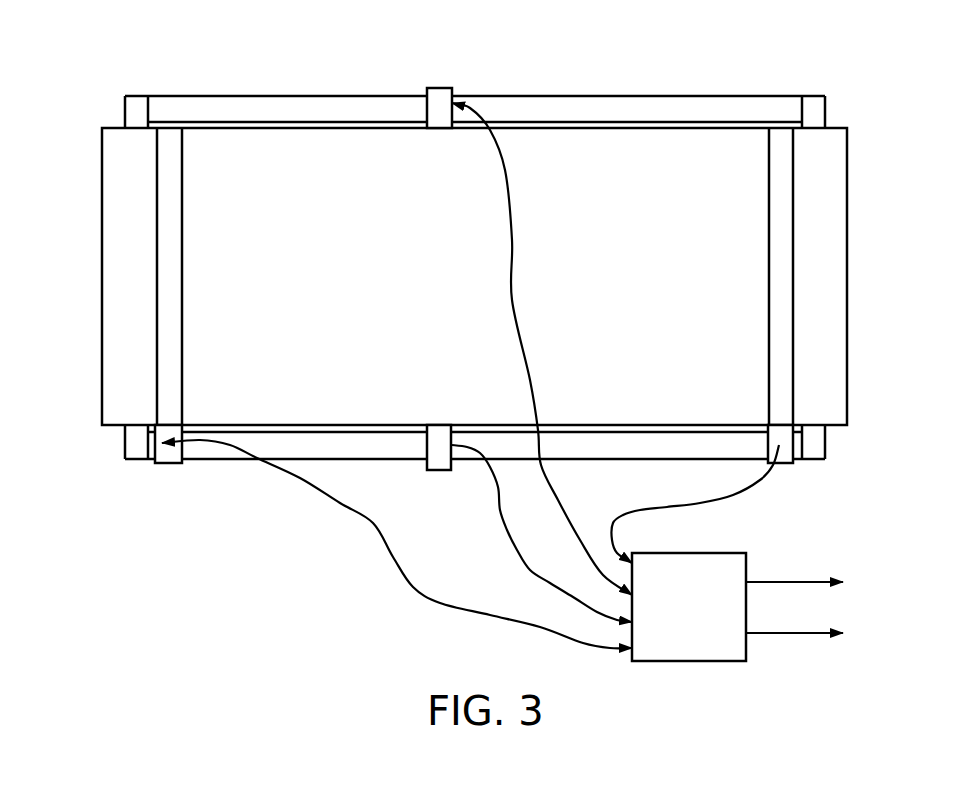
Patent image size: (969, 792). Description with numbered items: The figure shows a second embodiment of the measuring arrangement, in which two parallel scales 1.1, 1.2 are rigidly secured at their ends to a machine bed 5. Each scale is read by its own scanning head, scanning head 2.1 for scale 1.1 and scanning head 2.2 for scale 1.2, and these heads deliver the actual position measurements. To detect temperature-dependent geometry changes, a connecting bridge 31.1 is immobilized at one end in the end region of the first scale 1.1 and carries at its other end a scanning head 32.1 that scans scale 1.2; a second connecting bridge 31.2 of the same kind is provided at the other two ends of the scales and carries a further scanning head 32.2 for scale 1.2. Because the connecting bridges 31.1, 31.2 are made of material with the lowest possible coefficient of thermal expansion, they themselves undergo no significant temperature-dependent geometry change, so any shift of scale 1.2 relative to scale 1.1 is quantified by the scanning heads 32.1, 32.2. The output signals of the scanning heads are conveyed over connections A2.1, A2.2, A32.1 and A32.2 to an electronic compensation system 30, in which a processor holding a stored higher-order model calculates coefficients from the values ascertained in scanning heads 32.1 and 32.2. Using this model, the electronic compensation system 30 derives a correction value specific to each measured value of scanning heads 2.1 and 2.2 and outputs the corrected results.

The machine bed 5 is at (717, 152).
The scale 1.1 is at (614, 108).
The scale 1.2 is at (555, 443).
The scanning head 2.1 is at (437, 92).
The scanning head 2.2 is at (437, 460).
The connecting bridge 31.1 is at (172, 240).
The connecting bridge 31.2 is at (778, 203).
The scanning head 32.1 is at (172, 453).
The scanning head 32.2 is at (783, 453).
The signal line from sensor 2.1 A2.1 is at (512, 281).
The signal line from sensor 2.2 A2.2 is at (495, 497).
The signal line from sensor 32.1 A32.1 is at (403, 573).
The signal line from sensor 32.2 A32.2 is at (623, 512).
The electronic compensation system 30 is at (712, 562).